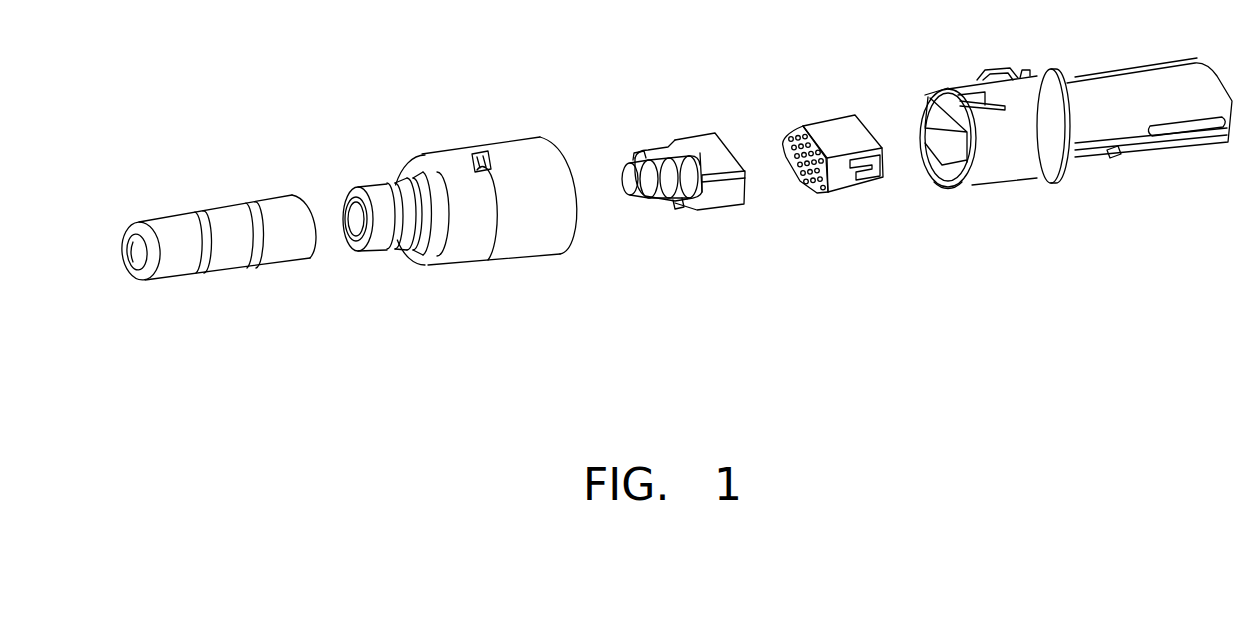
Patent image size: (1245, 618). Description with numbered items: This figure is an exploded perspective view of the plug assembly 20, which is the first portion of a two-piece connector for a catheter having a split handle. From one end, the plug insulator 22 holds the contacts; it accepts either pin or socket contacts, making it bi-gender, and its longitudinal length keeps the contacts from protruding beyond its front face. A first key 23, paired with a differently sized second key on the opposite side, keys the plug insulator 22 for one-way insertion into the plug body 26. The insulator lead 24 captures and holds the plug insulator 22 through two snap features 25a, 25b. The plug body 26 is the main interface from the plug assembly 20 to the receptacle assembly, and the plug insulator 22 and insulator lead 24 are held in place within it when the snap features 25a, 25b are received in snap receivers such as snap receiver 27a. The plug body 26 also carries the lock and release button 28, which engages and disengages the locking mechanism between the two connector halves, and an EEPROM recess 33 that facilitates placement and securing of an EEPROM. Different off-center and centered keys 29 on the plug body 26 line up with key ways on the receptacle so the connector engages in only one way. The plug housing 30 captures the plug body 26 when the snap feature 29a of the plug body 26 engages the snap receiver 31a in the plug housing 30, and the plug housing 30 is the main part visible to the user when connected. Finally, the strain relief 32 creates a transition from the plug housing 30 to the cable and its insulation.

The plug assembly 20 is at (300, 355).
The plug insulator 22 is at (836, 128).
The first key 23 is at (878, 196).
The insulator lead 24 is at (697, 135).
The snap feature 25a is at (688, 222).
The snap feature 25b is at (640, 155).
The plug body 26 is at (1117, 95).
The snap receiver 27a is at (1110, 158).
The lock and release button 28 is at (1002, 53).
The keys 29 is at (1163, 135).
The snap feature 29a is at (962, 75).
The plug housing 30 is at (512, 156).
The snap receiver 31a is at (456, 145).
The strain relief 32 is at (220, 218).
The EEPROM recess 33 is at (949, 200).